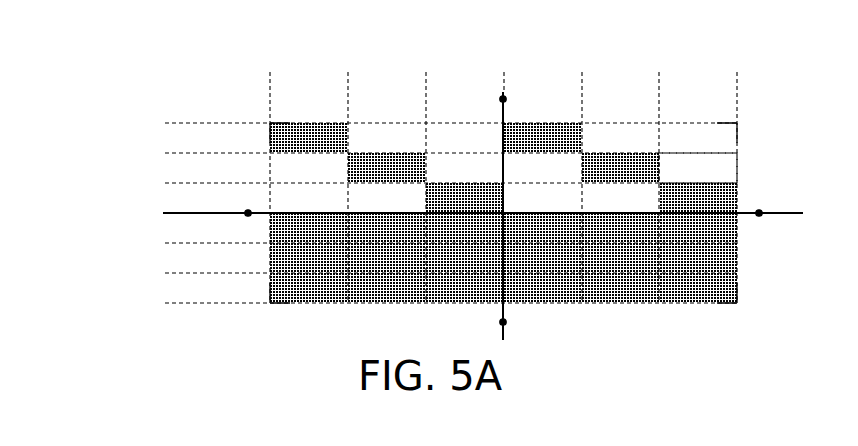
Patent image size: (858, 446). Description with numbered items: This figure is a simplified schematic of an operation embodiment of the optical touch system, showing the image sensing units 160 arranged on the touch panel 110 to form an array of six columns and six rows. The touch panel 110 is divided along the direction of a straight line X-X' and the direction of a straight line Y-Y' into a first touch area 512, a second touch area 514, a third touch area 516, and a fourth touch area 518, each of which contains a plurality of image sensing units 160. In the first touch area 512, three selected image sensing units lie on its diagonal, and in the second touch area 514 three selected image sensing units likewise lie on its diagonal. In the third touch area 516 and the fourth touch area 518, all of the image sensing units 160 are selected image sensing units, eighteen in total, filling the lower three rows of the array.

The touch panel 110 is at (128, 103).
The first touch area 512 is at (270, 123).
The second touch area 514 is at (737, 123).
The third touch area 516 is at (270, 303).
The fourth touch area 518 is at (737, 303).
The image sensing units 160 is at (720, 170).